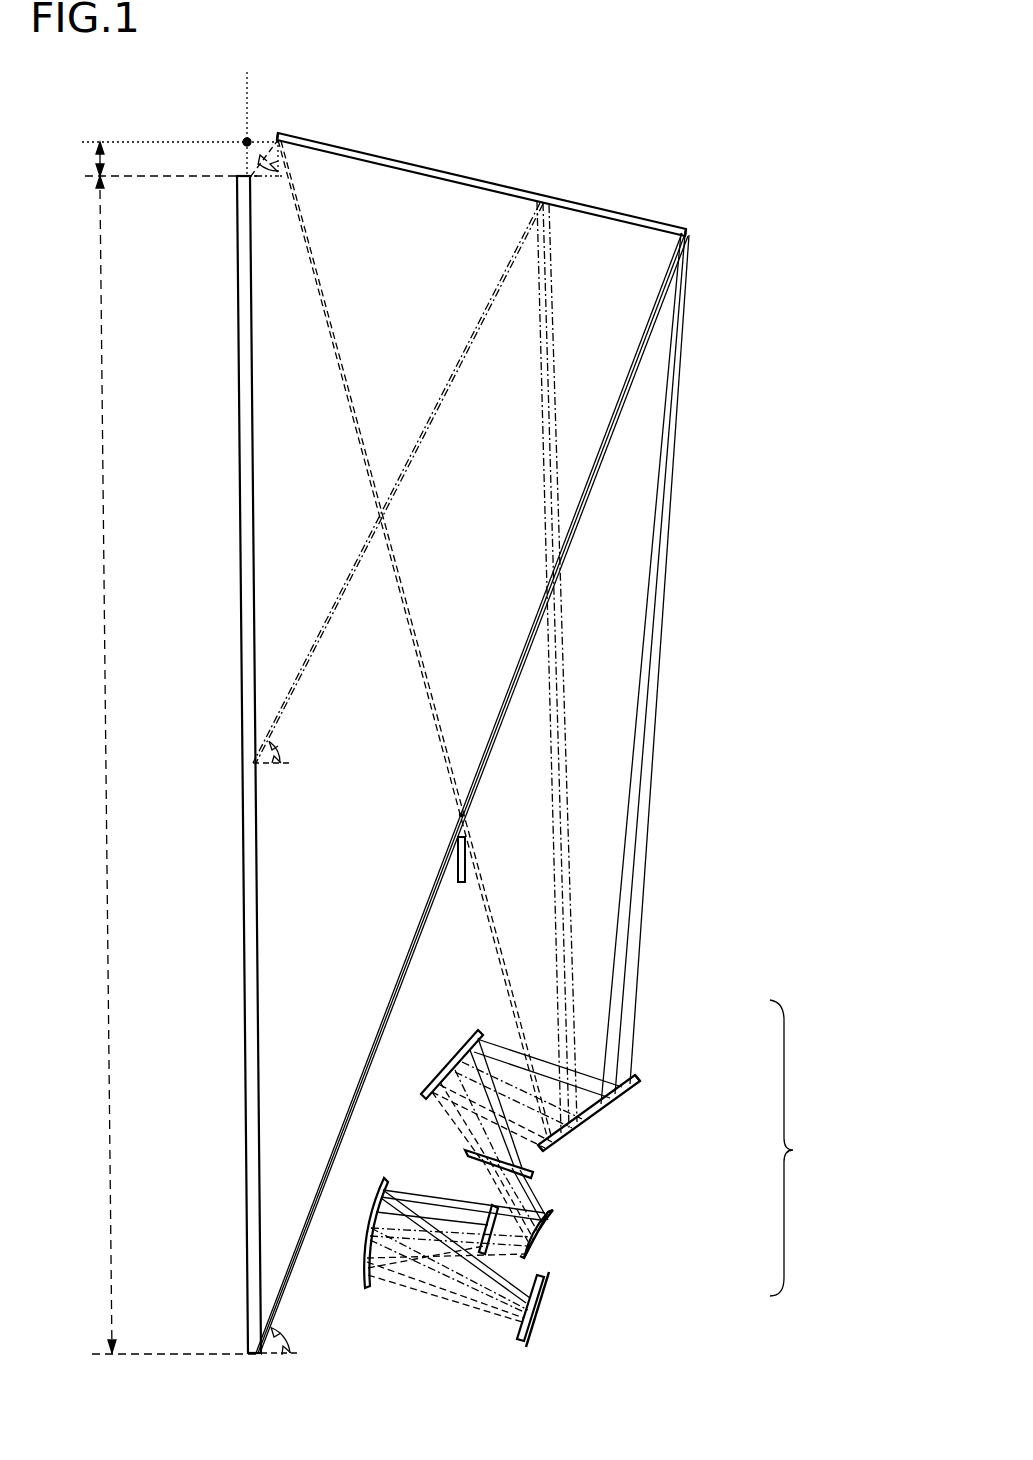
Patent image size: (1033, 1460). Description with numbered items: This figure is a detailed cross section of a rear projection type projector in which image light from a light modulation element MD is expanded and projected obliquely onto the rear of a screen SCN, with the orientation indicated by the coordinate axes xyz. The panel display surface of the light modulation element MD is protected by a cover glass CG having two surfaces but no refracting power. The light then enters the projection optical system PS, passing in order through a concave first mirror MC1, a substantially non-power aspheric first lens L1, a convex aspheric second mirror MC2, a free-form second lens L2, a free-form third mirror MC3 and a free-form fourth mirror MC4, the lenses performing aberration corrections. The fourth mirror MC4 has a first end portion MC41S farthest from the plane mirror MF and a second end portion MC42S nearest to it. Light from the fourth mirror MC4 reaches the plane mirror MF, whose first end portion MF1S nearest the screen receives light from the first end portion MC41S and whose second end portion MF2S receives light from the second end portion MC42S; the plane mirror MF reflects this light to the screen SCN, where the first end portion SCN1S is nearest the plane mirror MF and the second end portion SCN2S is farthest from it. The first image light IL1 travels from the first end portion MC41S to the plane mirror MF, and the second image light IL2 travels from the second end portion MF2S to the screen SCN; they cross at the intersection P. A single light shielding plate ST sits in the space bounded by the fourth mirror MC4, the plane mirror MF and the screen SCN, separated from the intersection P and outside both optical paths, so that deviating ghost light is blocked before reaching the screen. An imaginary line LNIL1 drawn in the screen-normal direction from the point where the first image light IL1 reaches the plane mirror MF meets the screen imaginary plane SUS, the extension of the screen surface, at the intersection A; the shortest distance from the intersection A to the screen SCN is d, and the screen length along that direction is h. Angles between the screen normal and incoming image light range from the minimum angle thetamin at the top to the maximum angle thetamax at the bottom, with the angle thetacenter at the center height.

The screen SCN is at (242, 810).
The first end portion of the screen SCN1S is at (236, 177).
The second end portion of the screen SCN2S is at (243, 1350).
The plane mirror MF is at (440, 171).
The first end portion of the plane mirror MF1S is at (281, 131).
The second end portion of the plane mirror MF2S is at (683, 224).
The first mirror MC1 is at (362, 1222).
The second mirror MC2 is at (556, 1222).
The third mirror MC3 is at (480, 1028).
The fourth mirror MC4 is at (600, 1106).
The first end portion of the fourth mirror MC41S is at (550, 1154).
The second end portion of the fourth mirror MC42S is at (636, 1073).
The first lens L1 is at (487, 1205).
The second lens L2 is at (534, 1175).
The cover glass CG is at (519, 1320).
The light modulation element MD is at (550, 1278).
The light shielding plate ST is at (466, 882).
The intersection P is at (455, 812).
The first image light IL1 is at (508, 974).
The second image light IL2 is at (509, 714).
The projection optical system PS is at (802, 1148).
The intersection A is at (238, 127).
The screen imaginary plane SUS is at (246, 102).
The imaginary line LNIL1 is at (190, 138).
The shortest distance d is at (165, 165).
The length of the screen h is at (171, 772).
The minimum angle thetamin is at (307, 160).
The angle of incidence at center thetacenter is at (319, 757).
The maximum angle thetamax is at (313, 1343).
The coordinate axes xyz is at (792, 128).